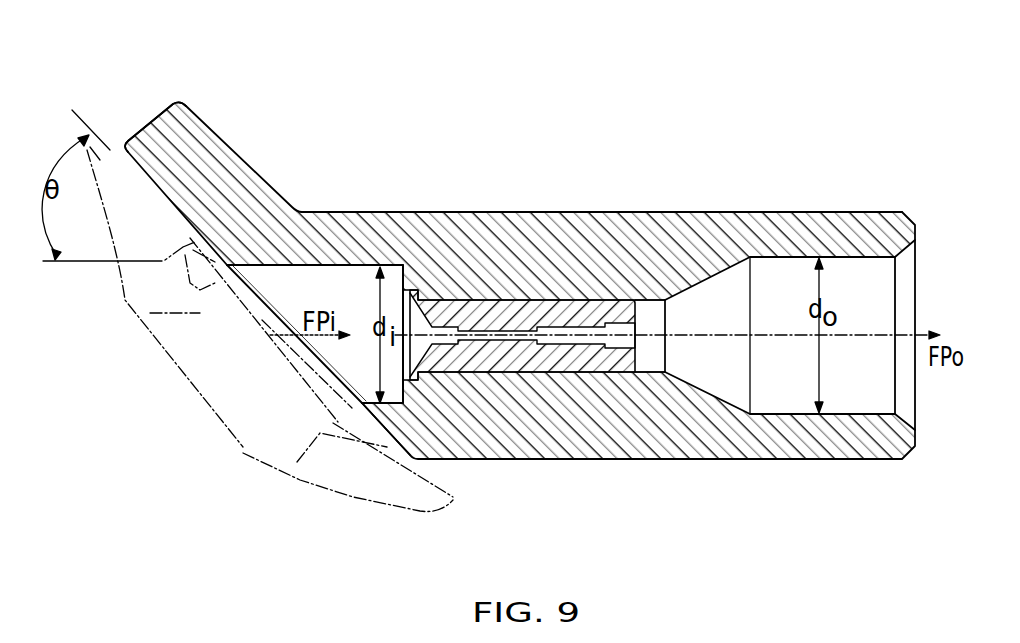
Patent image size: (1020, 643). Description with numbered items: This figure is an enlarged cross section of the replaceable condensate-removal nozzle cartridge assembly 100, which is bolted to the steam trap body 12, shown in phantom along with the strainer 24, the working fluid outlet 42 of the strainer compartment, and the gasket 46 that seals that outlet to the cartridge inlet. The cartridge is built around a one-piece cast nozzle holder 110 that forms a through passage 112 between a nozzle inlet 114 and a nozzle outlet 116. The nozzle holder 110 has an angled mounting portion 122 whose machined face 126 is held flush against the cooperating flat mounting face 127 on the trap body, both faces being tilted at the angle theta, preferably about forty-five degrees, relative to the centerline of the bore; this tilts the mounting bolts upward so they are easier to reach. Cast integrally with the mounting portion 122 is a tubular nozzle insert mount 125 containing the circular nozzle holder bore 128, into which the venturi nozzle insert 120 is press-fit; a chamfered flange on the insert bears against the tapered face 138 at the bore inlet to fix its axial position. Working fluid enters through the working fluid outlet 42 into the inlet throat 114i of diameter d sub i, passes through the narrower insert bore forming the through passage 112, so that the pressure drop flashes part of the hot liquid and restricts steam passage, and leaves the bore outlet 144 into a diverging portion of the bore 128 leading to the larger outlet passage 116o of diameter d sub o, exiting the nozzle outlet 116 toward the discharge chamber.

The replaceable condensate-removal nozzle cartridge assembly 100 is at (506, 212).
The nozzle holder 110 is at (703, 212).
The through passage 112 is at (592, 345).
The nozzle inlet 114 is at (258, 290).
The nozzle holder inlet throat 114i is at (337, 277).
The nozzle outlet 116 is at (908, 267).
The nozzle holder outlet passage 116o is at (858, 267).
The venturi nozzle insert 120 is at (627, 358).
The mounting portion 122 is at (197, 127).
The tubular nozzle insert mount 125 is at (548, 212).
The machined face 126 is at (134, 170).
The flat mounting face 127 is at (440, 483).
The nozzle holder bore 128 is at (712, 487).
The tapered face 138 is at (403, 268).
The bore outlet 144 is at (642, 303).
The steam trap body 12 is at (413, 497).
The strainer 24 is at (263, 447).
The working fluid outlet 42 is at (252, 298).
The gasket 46 is at (188, 266).